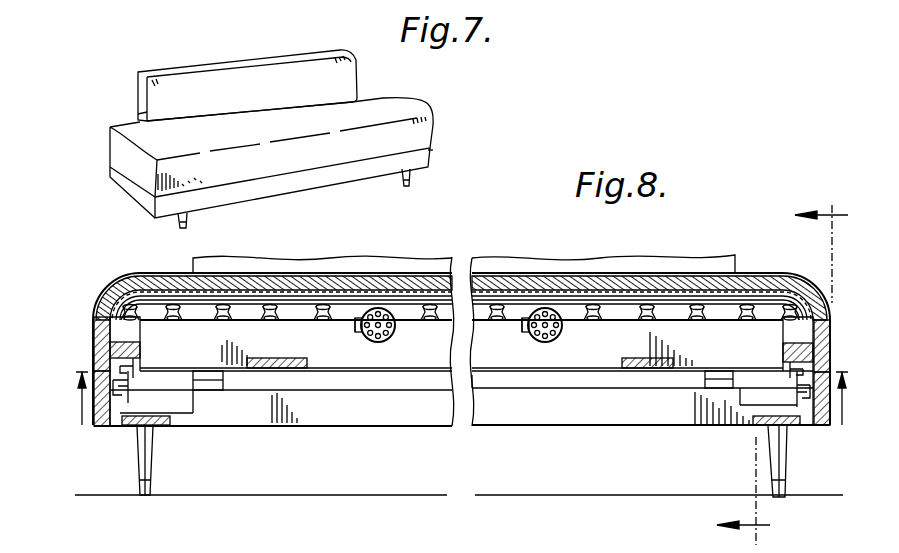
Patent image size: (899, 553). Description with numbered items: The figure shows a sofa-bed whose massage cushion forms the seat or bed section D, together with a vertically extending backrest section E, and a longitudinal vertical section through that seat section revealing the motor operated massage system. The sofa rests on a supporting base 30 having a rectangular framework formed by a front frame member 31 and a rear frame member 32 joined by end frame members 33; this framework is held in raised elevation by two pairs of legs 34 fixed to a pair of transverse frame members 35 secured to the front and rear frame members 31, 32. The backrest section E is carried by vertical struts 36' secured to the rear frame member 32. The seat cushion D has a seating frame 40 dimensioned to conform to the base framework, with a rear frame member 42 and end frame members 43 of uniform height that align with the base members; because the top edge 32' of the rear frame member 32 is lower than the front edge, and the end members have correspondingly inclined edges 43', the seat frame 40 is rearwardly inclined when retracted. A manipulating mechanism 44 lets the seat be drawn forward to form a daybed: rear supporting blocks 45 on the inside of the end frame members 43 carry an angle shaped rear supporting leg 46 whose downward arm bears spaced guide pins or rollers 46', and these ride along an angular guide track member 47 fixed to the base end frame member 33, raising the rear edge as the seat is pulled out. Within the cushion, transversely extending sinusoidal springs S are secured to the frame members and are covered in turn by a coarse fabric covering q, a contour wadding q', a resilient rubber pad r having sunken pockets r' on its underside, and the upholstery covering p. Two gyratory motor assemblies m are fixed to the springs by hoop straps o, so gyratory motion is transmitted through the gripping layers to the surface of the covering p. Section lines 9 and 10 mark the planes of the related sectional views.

In FIG. 7, the supporting base 30 is at (443, 158).
In FIG. 8, the supporting base 30 is at (460, 437).
In FIG. 7, the front frame member 31 is at (293, 188).
In FIG. 8, the rear frame member 32 is at (462, 428).
In FIG. 8, the top edge of rear frame member 32' is at (533, 396).
In FIG. 7, the end frame members 33 is at (132, 197).
In FIG. 8, the end frame members 33 is at (103, 426).
In FIG. 7, the legs 34 is at (192, 226).
In FIG. 8, the legs 34 is at (152, 472).
In FIG. 8, the transverse frame members 35 is at (160, 425).
In FIG. 7, the vertical struts 36' is at (118, 105).
In FIG. 8, the vertical struts 36' is at (463, 383).
In FIG. 8, the seating frame 40 is at (505, 373).
In FIG. 8, the rear frame member 42 is at (455, 373).
In FIG. 8, the end frame members 43 is at (465, 347).
In FIG. 8, the bottom panel block 43' is at (457, 374).
In FIG. 8, the manipulating mechanism 44 is at (157, 376).
In FIG. 8, the rear supporting blocks 45 is at (134, 350).
In FIG. 8, the rear supporting leg 46 is at (461, 360).
In FIG. 8, the guide pins or rollers 46' is at (461, 391).
In FIG. 8, the guide track member 47 is at (186, 413).
In FIG. 8, the section line 9- 9 is at (461, 418).
In FIG. 8, the section line 10- 10 is at (782, 368).
In FIG. 7, the seat or bed section D is at (434, 105).
In FIG. 8, the seat or bed section D is at (412, 268).
In FIG. 7, the backrest section E is at (366, 70).
In FIG. 8, the backrest section E is at (533, 250).
In FIG. 8, the upholstery covering p is at (588, 274).
In FIG. 8, the resilient rubber pad r is at (461, 268).
In FIG. 8, the sunken pockets r' is at (461, 268).
In FIG. 8, the contour wadding q' is at (461, 268).
In FIG. 8, the coarse fabric covering q is at (461, 268).
In FIG. 8, the sinusoidal springs S is at (293, 320).
In FIG. 8, the hoop straps o is at (365, 335).
In FIG. 8, the gyratory motor assembly m is at (385, 338).